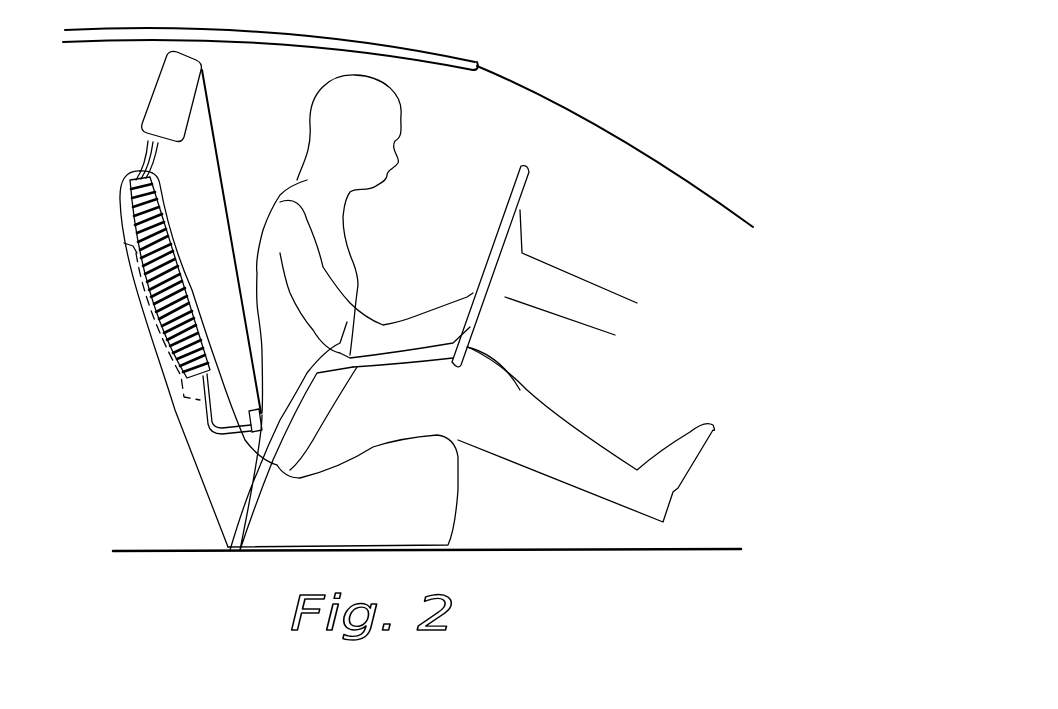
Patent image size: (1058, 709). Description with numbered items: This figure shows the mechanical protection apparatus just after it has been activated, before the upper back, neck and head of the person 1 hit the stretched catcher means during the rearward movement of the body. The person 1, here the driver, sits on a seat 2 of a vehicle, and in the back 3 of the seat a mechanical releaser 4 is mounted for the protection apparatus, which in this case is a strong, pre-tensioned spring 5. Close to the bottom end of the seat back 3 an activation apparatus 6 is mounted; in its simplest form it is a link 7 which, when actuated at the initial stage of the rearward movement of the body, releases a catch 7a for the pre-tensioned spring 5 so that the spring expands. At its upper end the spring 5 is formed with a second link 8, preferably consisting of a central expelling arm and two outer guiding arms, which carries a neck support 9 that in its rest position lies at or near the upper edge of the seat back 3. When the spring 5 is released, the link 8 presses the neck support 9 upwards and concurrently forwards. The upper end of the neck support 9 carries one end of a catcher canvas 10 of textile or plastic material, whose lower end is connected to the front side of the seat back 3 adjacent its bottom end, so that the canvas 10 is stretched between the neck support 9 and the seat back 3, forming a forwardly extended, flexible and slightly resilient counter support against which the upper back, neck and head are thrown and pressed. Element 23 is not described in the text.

The person 1 is at (327, 228).
The seat 2 is at (405, 510).
The seat back 3 is at (163, 377).
The mechanical releaser 4 is at (140, 278).
The pre-tensioned spring 5 is at (131, 218).
The activation apparatus 6 is at (250, 430).
The link 7 is at (203, 410).
The catch 7a is at (124, 243).
The second link 8 is at (145, 160).
The neck support 9 is at (163, 103).
The catcher canvas 10 is at (217, 100).
The support plate 23 is at (158, 327).